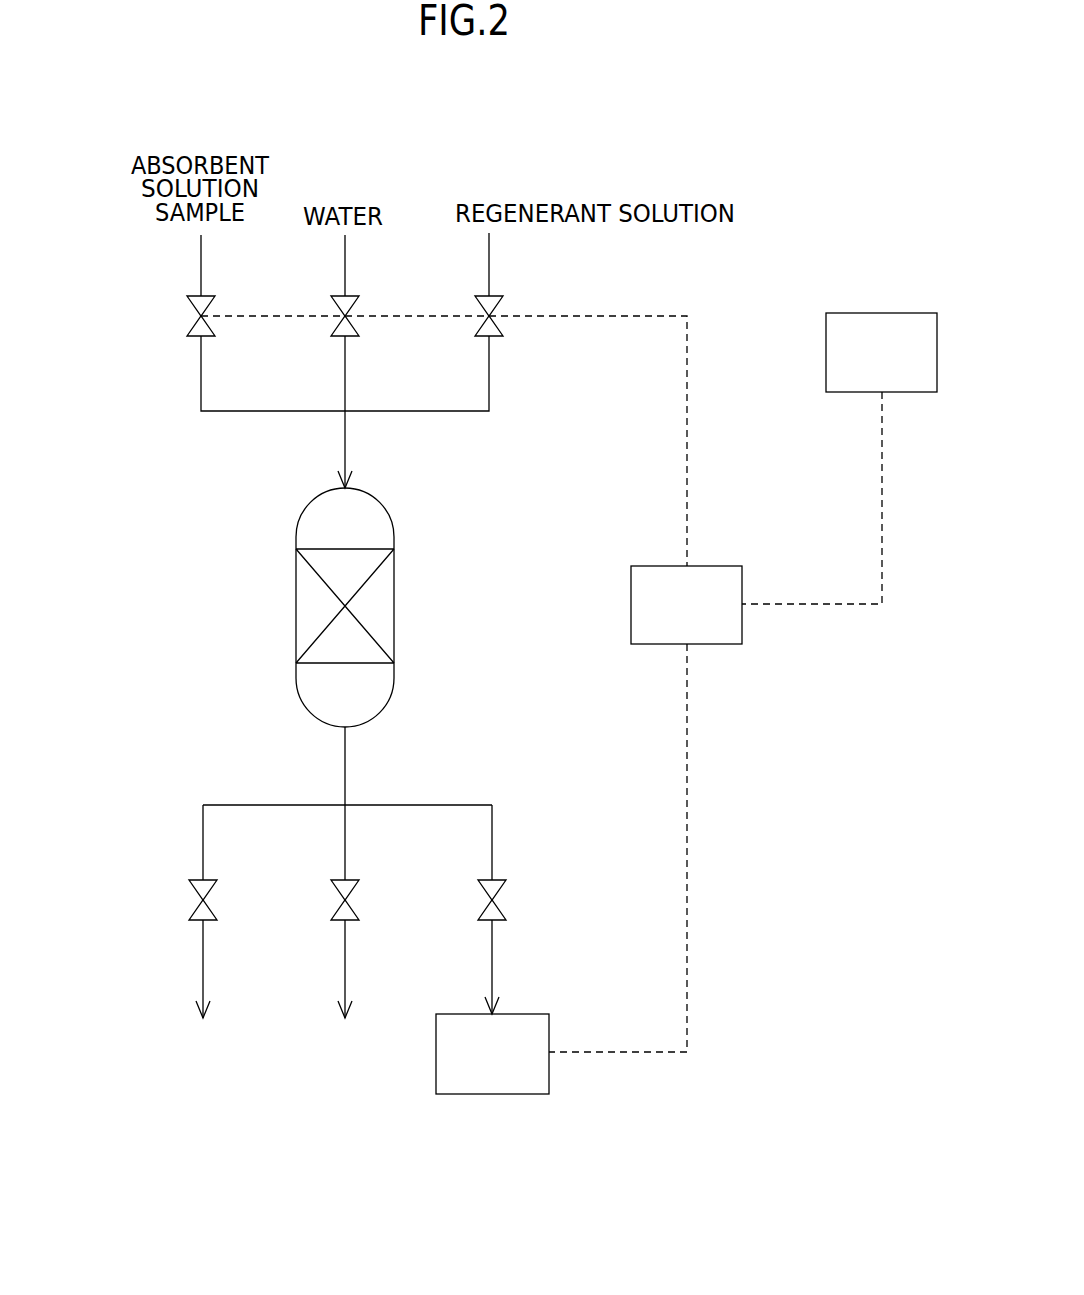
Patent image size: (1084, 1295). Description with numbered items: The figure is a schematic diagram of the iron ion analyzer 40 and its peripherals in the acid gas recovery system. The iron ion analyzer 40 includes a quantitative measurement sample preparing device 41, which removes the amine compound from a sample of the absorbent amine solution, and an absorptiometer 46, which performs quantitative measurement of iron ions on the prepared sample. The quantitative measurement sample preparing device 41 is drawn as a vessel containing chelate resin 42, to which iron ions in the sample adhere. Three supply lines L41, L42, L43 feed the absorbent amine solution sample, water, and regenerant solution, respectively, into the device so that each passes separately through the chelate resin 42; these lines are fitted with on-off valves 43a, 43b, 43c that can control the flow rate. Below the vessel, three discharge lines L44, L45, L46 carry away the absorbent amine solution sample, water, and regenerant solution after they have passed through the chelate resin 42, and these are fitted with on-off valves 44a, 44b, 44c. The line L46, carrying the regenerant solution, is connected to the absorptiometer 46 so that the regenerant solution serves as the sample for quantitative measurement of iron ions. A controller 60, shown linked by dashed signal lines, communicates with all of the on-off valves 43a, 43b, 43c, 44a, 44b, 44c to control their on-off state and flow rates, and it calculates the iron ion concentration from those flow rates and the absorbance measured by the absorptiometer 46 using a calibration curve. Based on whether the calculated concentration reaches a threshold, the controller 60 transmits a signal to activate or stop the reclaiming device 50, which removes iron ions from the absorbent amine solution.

The iron ion analyzer 40 is at (112, 212).
The quantitative measurement sample preparing device 41 is at (344, 607).
The chelate resin 42 is at (387, 612).
The on-off valve 43a is at (188, 312).
The on-off valve 43b is at (330, 307).
The on-off valve 43c is at (478, 305).
The on-off valve 44a is at (190, 897).
The on-off valve 44b is at (335, 890).
The on-off valve 44c is at (482, 892).
The absorptiometer 46 is at (460, 1093).
The reclaiming device 50 is at (845, 311).
The controller 60 is at (655, 565).
The line L41 is at (198, 368).
The line L42 is at (343, 367).
The line L43 is at (489, 368).
The line L44 is at (203, 963).
The line L45 is at (345, 958).
The line L46 is at (493, 958).